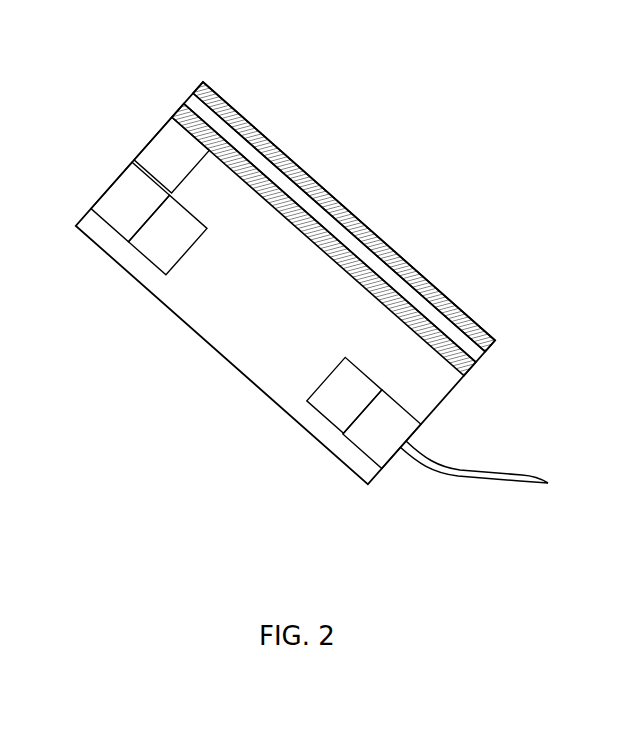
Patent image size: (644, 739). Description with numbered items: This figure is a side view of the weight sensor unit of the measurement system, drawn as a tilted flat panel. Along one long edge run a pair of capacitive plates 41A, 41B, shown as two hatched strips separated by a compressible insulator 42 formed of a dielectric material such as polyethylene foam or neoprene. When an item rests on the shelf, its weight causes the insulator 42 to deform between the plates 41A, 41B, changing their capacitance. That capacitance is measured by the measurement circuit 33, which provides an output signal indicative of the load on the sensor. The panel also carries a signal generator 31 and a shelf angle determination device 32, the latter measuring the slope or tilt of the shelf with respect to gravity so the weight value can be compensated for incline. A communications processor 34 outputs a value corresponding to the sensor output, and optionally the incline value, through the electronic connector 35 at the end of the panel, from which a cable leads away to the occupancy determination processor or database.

The signal generator 31 is at (130, 202).
The shelf angle determination device 32 is at (167, 235).
The measurement circuit 33 is at (171, 155).
The communications processor 34 is at (344, 395).
The electronic connector 35 is at (382, 429).
The capacitive plate 41A is at (219, 89).
The capacitive plate 41B is at (173, 115).
The compressible insulator 42 is at (187, 99).